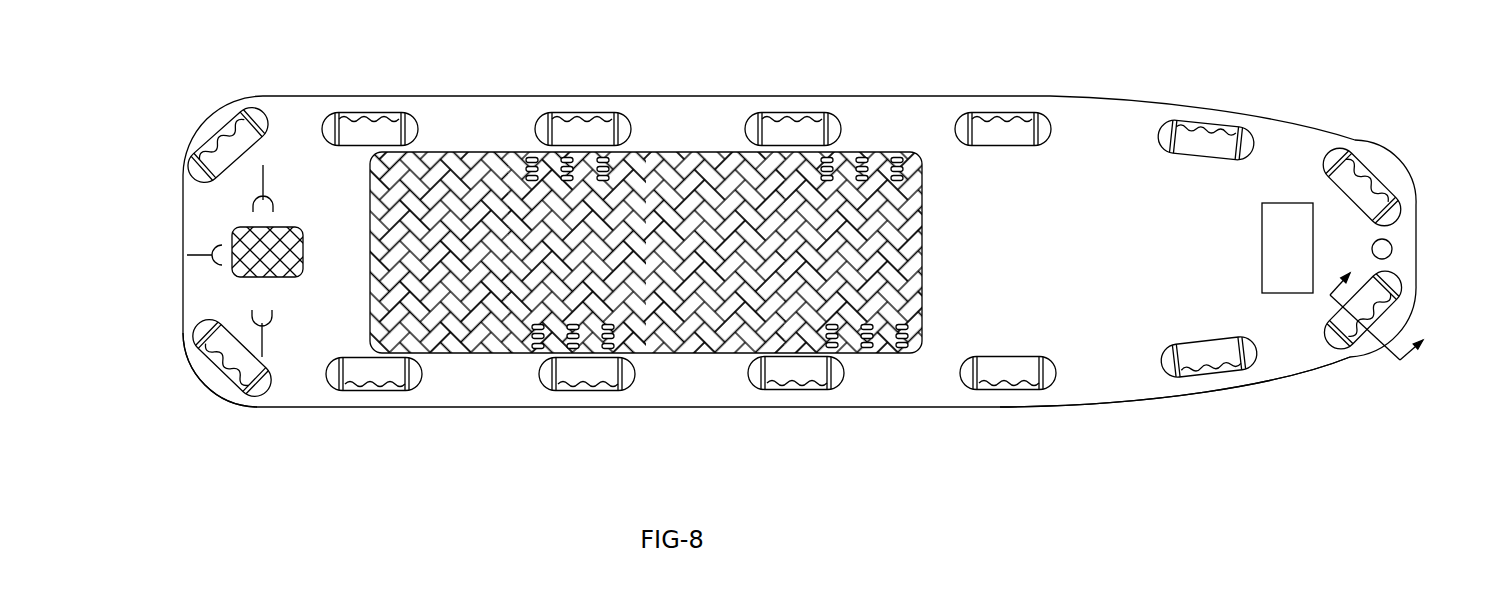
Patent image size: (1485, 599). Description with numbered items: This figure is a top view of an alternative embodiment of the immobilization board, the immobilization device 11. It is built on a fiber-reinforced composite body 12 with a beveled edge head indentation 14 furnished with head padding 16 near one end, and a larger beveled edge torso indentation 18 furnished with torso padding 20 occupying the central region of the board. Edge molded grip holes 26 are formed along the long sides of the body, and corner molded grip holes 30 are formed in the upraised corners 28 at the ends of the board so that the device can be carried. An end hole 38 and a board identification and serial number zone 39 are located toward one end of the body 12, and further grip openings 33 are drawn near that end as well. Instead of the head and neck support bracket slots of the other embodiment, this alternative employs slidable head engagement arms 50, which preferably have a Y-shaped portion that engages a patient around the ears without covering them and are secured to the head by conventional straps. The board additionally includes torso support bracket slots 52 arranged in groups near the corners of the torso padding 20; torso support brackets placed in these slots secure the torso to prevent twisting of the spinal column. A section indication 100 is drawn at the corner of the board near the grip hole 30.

The immobilization device 11 is at (1030, 66).
The fiber-reinforced composite body 12 is at (1140, 385).
The beveled edge head indentation 14 is at (262, 268).
The head padding 16 is at (231, 233).
The beveled edge torso indentation 18 is at (519, 350).
The torso padding 20 is at (691, 314).
The edge molded grip holes 26 is at (808, 122).
The upraised corners 28 is at (210, 406).
The corner molded grip holes 30 is at (240, 124).
The angled hand hold slot 33 is at (1178, 123).
The end hole 38 is at (1390, 256).
The board identification and serial number zone 39 is at (1281, 209).
The slidable head engagement arms 50 is at (264, 166).
The torso support bracket slots 52 is at (565, 156).
The section line 100 is at (1390, 351).